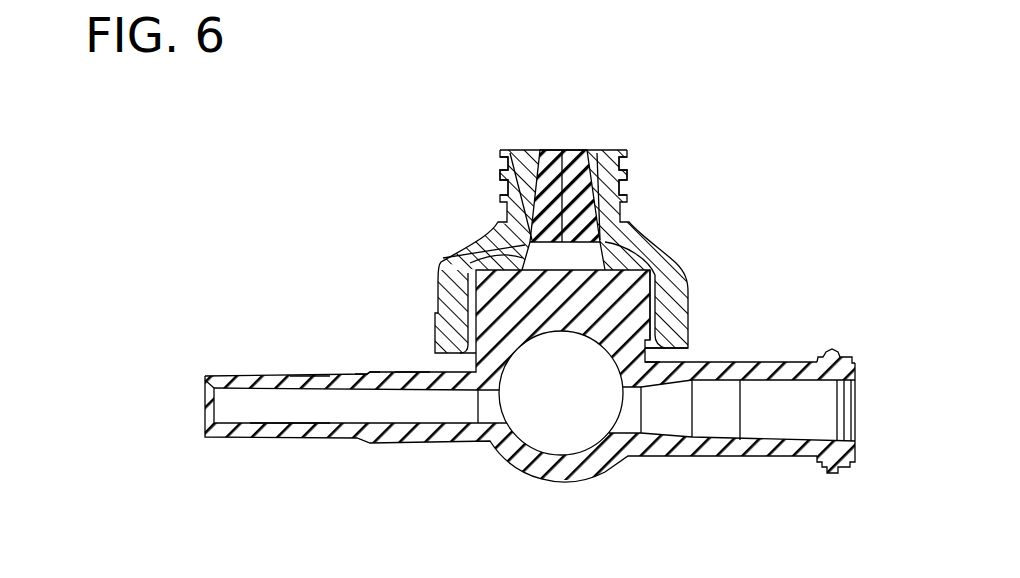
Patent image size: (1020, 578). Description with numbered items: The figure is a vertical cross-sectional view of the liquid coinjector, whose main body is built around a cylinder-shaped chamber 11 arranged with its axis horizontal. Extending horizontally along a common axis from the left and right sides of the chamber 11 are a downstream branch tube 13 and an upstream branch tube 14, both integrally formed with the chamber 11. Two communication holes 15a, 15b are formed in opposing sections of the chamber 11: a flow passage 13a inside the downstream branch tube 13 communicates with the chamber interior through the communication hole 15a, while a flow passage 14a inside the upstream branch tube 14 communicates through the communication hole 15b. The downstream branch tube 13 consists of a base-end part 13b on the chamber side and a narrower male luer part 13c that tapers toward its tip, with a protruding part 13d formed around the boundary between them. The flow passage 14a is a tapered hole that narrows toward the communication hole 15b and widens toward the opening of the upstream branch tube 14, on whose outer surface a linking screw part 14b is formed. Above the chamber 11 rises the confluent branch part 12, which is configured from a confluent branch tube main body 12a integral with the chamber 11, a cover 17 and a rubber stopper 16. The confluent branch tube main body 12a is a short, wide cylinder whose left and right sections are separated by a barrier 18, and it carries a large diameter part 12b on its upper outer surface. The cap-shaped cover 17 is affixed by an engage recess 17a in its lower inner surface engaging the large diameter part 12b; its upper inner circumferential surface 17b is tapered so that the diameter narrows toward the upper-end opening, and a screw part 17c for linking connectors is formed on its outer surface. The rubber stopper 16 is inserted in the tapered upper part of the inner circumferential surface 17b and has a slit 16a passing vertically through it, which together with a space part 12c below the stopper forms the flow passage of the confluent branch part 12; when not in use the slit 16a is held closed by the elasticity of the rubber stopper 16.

The chamber 11 is at (590, 467).
The confluent branch part 12 is at (478, 222).
The confluent branch tube main body 12a is at (657, 350).
The large diameter part 12b is at (648, 296).
The space part 12c is at (587, 257).
The downstream branch tube 13 is at (428, 325).
The flow passage 13a is at (290, 424).
The base-end part 13b is at (412, 375).
The male luer part 13c is at (309, 377).
The protruding part 13d is at (367, 374).
The upstream branch tube 14 is at (748, 447).
The flow passage 14a is at (793, 442).
The linking screw part 14b is at (832, 350).
The communication hole 15a is at (498, 423).
The communication hole 15b is at (627, 428).
The rubber stopper 16 is at (573, 155).
The slit 16a is at (557, 150).
The cover 17 is at (617, 237).
The engage recess 17a is at (466, 283).
The inner circumferential surface 17b is at (593, 172).
The screw part 17c is at (510, 172).
The barrier 18 is at (480, 254).